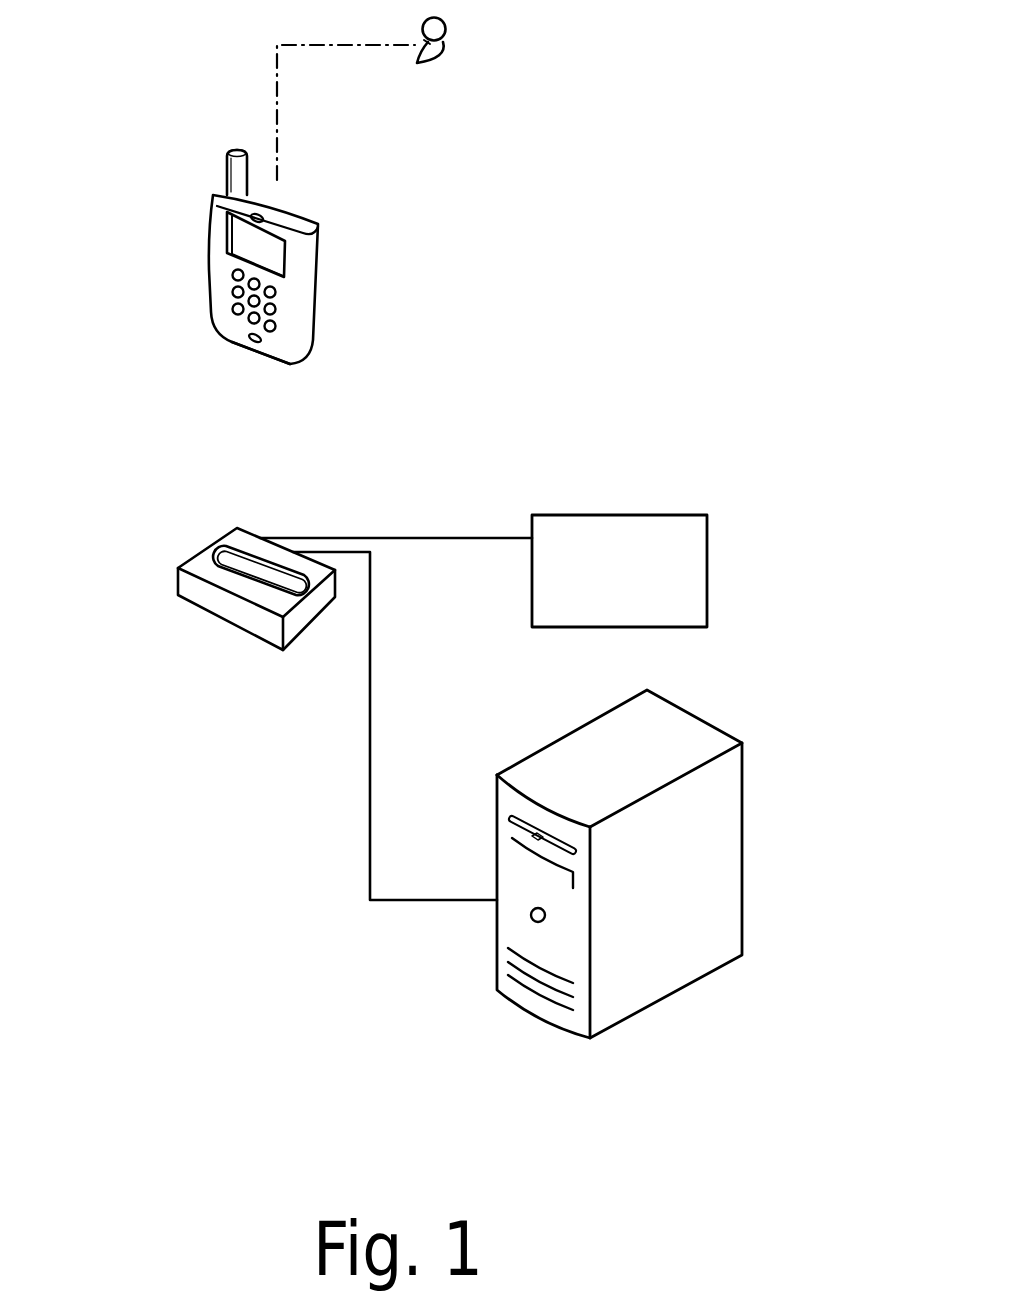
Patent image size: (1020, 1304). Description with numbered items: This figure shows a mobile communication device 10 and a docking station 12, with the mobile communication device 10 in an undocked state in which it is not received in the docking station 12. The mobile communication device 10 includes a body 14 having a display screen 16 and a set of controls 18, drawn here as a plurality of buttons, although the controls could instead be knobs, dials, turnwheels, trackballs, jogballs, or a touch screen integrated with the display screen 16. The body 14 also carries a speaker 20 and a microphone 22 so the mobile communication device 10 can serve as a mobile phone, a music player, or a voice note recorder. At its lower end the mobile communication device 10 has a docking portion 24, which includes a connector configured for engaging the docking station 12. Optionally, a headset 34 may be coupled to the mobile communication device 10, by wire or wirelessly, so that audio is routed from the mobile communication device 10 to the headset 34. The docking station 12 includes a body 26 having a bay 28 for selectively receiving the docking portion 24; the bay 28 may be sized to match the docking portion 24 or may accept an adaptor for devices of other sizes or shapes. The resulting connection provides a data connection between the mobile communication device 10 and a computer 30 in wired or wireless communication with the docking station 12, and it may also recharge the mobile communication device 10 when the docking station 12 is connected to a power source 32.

The mobile communication device 10 is at (273, 283).
The docking station 12 is at (326, 692).
The body 14 is at (313, 272).
The display screen 16 is at (268, 243).
The set of controls 18 is at (275, 308).
The speaker 20 is at (265, 217).
The microphone 22 is at (252, 345).
The docking portion 24 is at (254, 373).
The body 26 is at (220, 607).
The bay 28 is at (233, 558).
The computer 30 is at (503, 975).
The power source 32 is at (572, 515).
The headset 34 is at (466, 44).